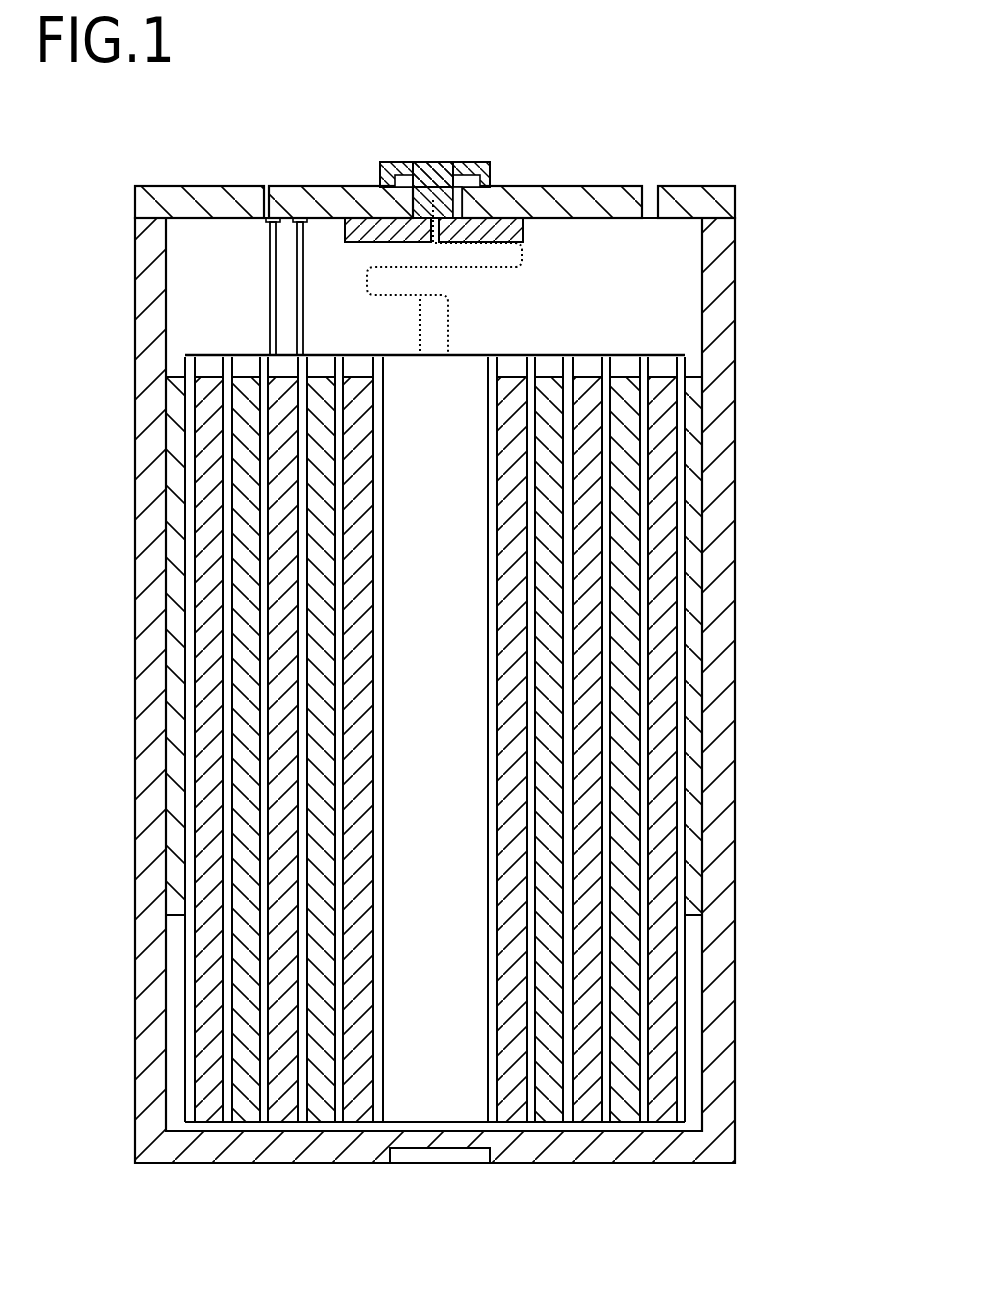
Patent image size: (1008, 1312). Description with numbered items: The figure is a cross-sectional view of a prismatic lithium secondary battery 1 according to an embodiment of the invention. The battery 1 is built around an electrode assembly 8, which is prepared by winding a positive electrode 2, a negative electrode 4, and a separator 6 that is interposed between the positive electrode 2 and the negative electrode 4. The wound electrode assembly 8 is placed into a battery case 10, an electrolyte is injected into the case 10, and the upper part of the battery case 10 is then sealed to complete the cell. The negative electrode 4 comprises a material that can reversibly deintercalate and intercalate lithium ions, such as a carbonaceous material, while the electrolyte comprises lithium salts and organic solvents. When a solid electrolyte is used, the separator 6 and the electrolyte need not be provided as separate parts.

The lithium secondary battery 1 is at (808, 352).
The positive electrode 2 is at (665, 978).
The negative electrode 4 is at (250, 923).
The separator 6 is at (230, 1055).
The electrode assembly 8 is at (603, 337).
The battery case 10 is at (142, 323).